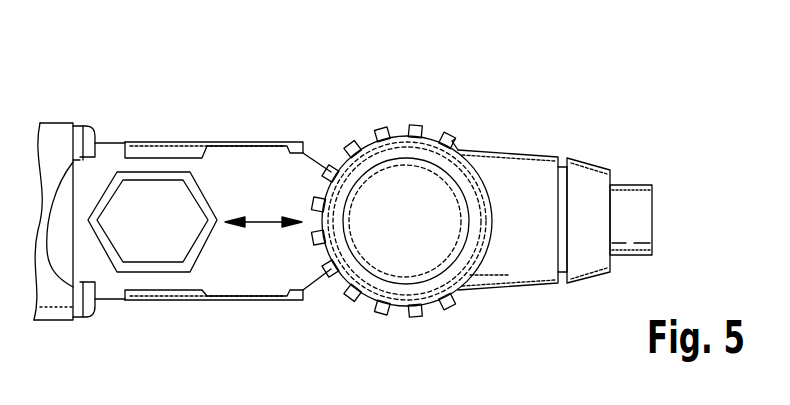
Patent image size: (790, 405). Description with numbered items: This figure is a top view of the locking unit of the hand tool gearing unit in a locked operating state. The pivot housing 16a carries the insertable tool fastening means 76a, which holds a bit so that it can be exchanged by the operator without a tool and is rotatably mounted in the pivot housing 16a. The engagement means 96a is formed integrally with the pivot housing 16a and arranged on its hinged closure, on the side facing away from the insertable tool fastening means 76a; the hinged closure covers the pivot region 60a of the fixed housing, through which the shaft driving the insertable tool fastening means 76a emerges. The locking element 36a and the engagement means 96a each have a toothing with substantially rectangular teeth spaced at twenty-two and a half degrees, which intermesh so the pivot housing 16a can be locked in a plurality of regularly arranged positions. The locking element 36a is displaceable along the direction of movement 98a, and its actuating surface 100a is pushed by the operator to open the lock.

The actuating surface 100a is at (152, 212).
The locking element 36a is at (243, 175).
The direction of movement 98a is at (268, 217).
The engagement means 96a is at (381, 134).
The pivot region 60a is at (482, 169).
The pivot housing 16a is at (525, 177).
The insertable tool fastening means 76a is at (630, 202).